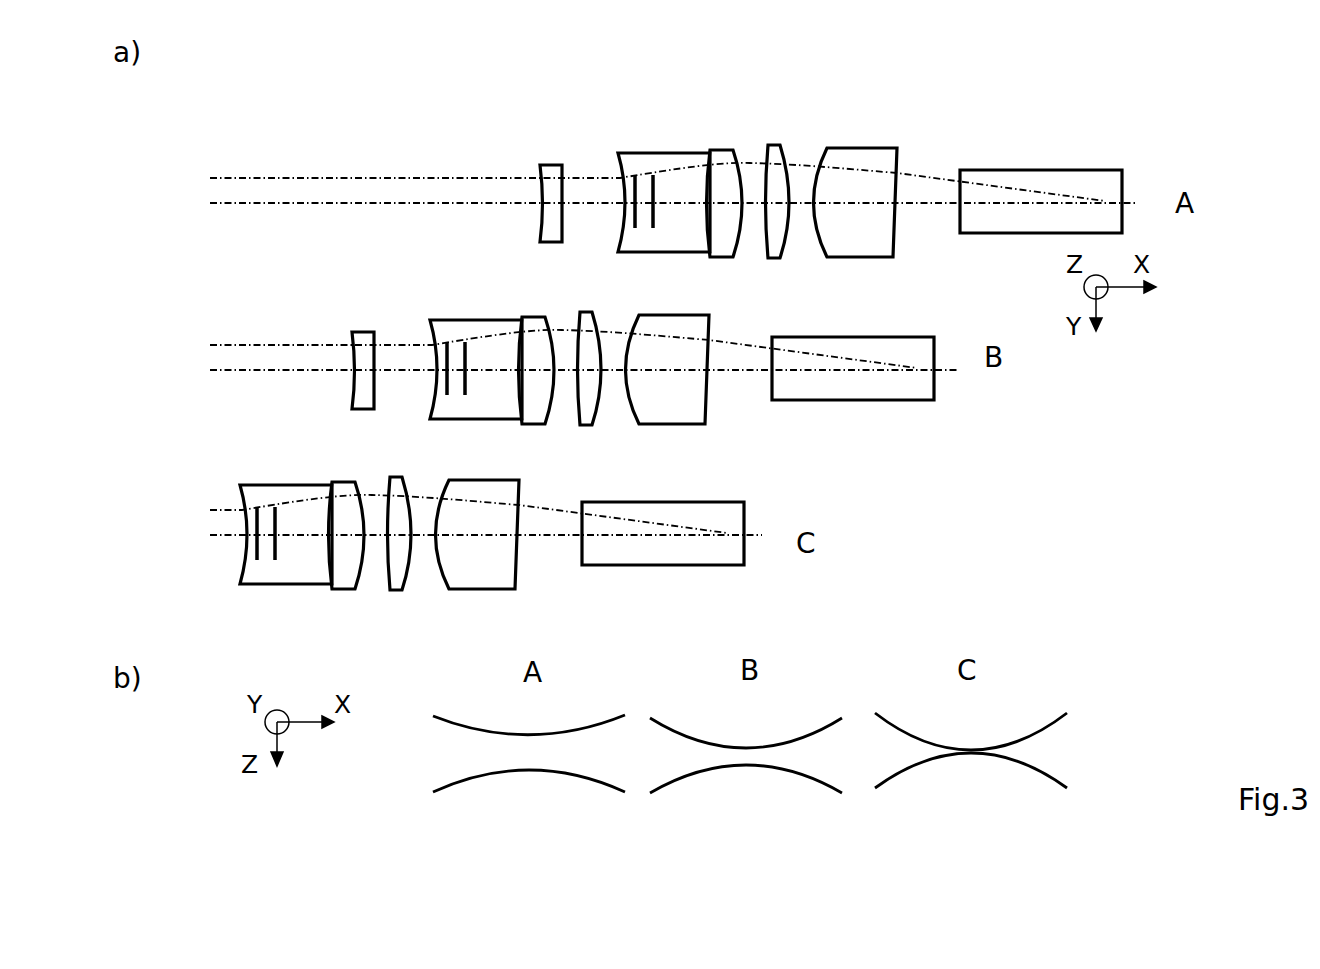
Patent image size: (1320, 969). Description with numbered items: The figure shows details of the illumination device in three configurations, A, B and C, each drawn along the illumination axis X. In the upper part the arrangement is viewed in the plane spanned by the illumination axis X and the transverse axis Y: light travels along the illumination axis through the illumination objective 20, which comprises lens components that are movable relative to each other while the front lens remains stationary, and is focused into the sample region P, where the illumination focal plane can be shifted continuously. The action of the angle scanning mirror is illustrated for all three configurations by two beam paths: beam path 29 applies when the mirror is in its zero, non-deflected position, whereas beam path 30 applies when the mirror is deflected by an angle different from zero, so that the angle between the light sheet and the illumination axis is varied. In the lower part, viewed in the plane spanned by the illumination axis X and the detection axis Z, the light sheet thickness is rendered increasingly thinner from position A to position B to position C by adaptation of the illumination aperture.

The illumination objective 20 is at (522, 150).
The beam path 29 is at (390, 203).
The beam path 30 is at (395, 178).
The sample region P is at (1055, 168).